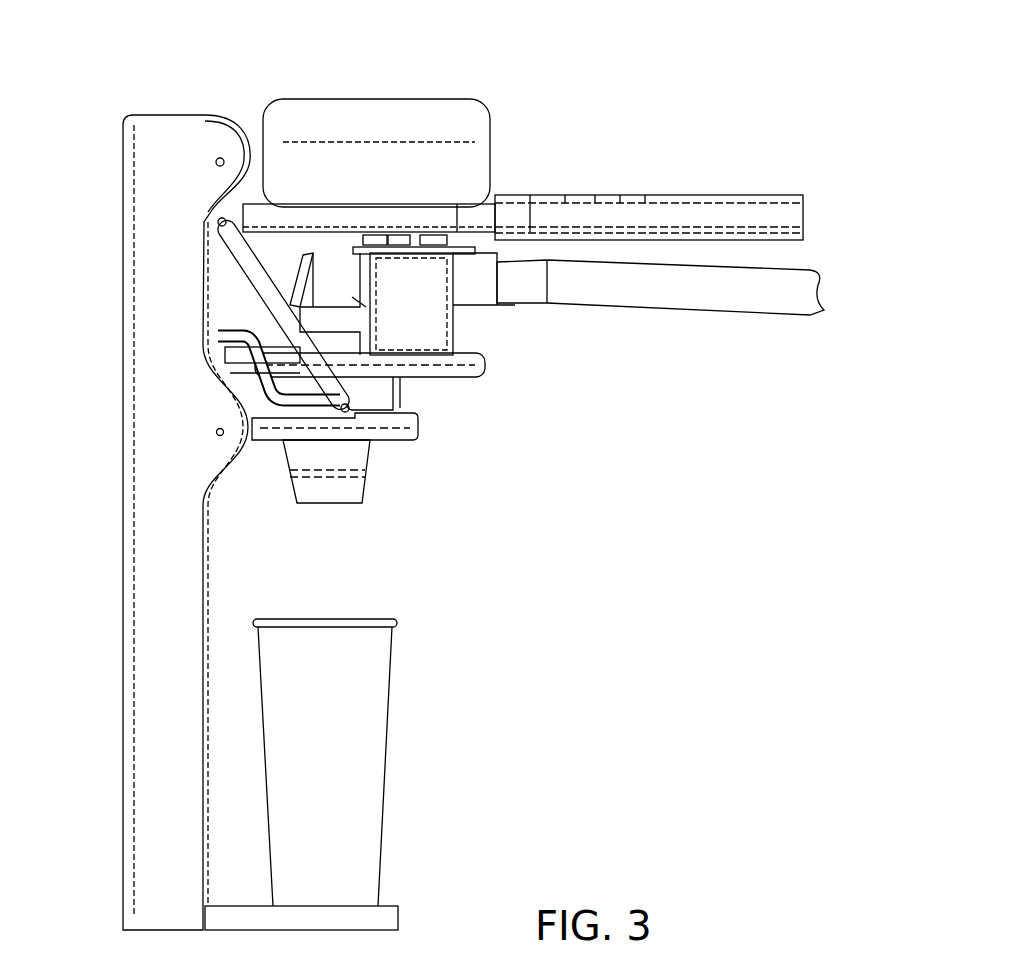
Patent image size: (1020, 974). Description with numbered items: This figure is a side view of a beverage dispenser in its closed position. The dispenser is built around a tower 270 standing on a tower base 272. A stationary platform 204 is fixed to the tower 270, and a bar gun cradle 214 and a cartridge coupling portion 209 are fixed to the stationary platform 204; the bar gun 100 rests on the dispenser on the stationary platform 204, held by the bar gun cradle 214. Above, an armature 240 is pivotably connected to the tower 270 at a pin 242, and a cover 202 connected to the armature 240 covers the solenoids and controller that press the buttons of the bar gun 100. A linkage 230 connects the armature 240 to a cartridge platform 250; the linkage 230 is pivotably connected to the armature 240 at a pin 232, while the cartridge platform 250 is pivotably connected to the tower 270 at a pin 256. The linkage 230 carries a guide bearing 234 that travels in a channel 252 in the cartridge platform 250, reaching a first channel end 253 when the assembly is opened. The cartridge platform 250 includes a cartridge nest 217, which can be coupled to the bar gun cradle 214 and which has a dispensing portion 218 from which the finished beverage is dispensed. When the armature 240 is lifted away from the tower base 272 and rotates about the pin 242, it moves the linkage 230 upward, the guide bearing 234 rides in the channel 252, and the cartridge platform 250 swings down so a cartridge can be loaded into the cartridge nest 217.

The bar gun 100 is at (572, 324).
The cover 202 is at (368, 99).
The stationary platform 204 is at (485, 365).
The cartridge coupling portion 209 is at (405, 398).
The bar gun cradle 214 is at (440, 330).
The cartridge nest 217 is at (388, 506).
The dispensing portion 218 is at (332, 503).
The linkage 230 is at (240, 262).
The pin 232 is at (216, 222).
The guide bearing 234 is at (370, 445).
The armature 240 is at (549, 218).
The pin 242 is at (219, 158).
The cartridge platform 250 is at (420, 432).
The channel 252 is at (263, 407).
The first channel end 253 is at (220, 335).
The pin 256 is at (215, 432).
The tower 270 is at (150, 548).
The tower base 272 is at (400, 912).